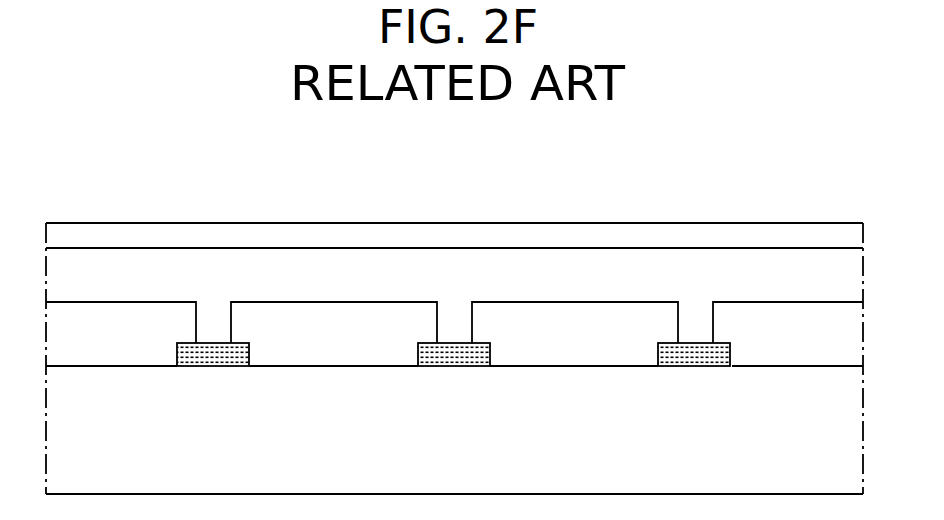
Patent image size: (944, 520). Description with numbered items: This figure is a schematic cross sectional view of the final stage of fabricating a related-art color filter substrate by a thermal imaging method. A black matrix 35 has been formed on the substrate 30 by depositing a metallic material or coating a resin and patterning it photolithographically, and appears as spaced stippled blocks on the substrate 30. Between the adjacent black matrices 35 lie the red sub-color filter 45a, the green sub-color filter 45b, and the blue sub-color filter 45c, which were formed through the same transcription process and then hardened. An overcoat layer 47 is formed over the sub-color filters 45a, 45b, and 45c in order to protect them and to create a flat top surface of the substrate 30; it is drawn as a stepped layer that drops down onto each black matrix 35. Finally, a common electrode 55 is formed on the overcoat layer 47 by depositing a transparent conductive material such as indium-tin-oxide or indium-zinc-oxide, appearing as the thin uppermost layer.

The substrate 30 is at (468, 441).
The black matrix 35 is at (697, 352).
The red sub-color filter 45a is at (330, 322).
The green sub-color filter 45b is at (575, 322).
The blue sub-color filter 45c is at (112, 322).
The overcoat layer 47 is at (462, 268).
The common electrode 55 is at (216, 230).